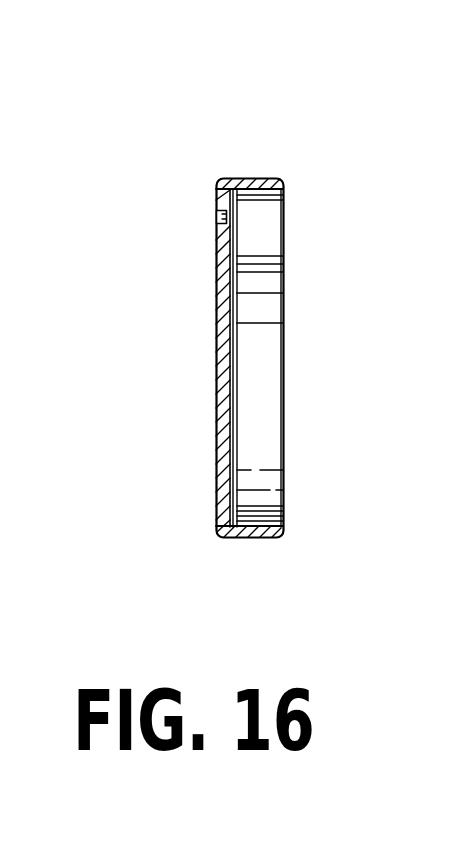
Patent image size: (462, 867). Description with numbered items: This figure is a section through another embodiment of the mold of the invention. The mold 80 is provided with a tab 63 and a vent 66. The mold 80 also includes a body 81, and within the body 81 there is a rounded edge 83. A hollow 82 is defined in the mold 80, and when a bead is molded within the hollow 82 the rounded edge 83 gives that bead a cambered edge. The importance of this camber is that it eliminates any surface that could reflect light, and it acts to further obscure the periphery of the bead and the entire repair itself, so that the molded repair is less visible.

The tab 63 is at (254, 198).
The vent 66 is at (216, 218).
The mold 80 is at (275, 540).
The body 81 is at (210, 440).
The hollow 82 is at (265, 398).
The rounded edge 83 is at (217, 486).